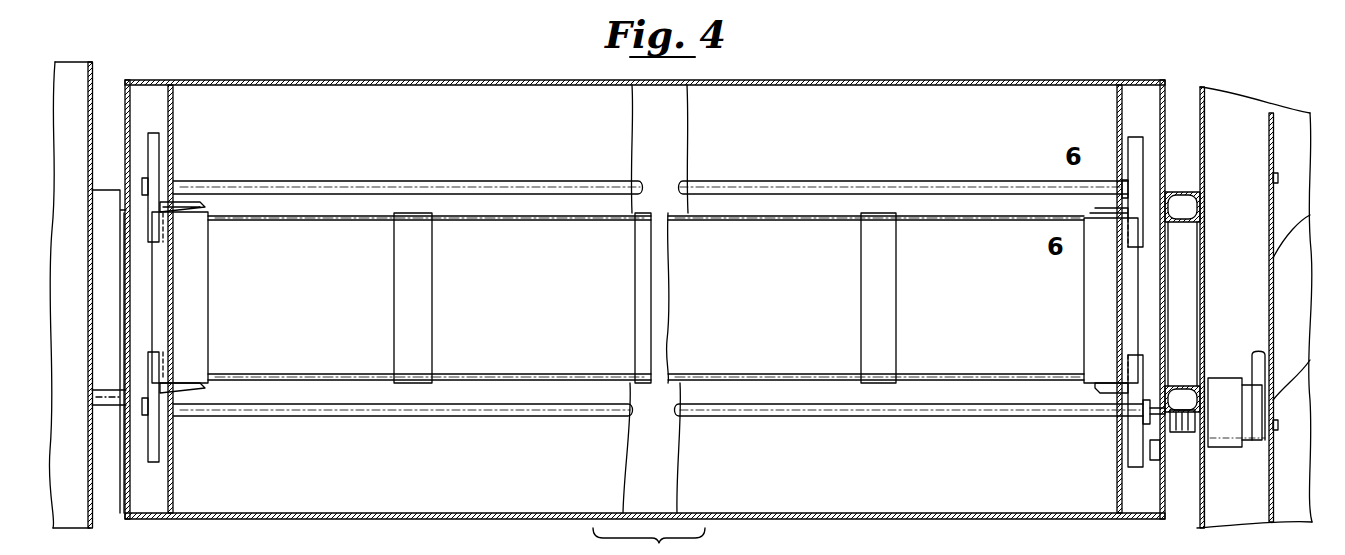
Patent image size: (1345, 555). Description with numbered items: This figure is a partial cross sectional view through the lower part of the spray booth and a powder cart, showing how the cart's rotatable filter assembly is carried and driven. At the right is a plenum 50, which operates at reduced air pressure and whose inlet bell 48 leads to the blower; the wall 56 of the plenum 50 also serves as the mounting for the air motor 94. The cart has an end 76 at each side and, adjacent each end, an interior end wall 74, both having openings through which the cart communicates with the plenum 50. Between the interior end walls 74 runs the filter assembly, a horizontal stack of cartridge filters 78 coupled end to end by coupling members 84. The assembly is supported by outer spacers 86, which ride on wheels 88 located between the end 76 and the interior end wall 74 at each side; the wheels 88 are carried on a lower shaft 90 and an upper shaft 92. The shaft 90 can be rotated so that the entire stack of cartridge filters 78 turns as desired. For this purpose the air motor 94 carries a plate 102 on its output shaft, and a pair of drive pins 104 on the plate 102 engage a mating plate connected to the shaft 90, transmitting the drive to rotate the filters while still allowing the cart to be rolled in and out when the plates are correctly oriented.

The inlet bell 48 is at (1275, 222).
The plenum 50 is at (1245, 125).
The wall of the plenum 56 is at (1204, 514).
The interior end wall 74 is at (174, 128).
The end 76 is at (126, 92).
The cartridge filter 78 is at (305, 217).
The coupling member 84 is at (418, 213).
The outer spacer 86 is at (205, 292).
The wheel 88 is at (154, 133).
The shaft 90 is at (517, 413).
The shaft 92 is at (372, 183).
The air motor 94 is at (1222, 378).
The plate 102 is at (1182, 434).
The drive pin 104 is at (1162, 455).